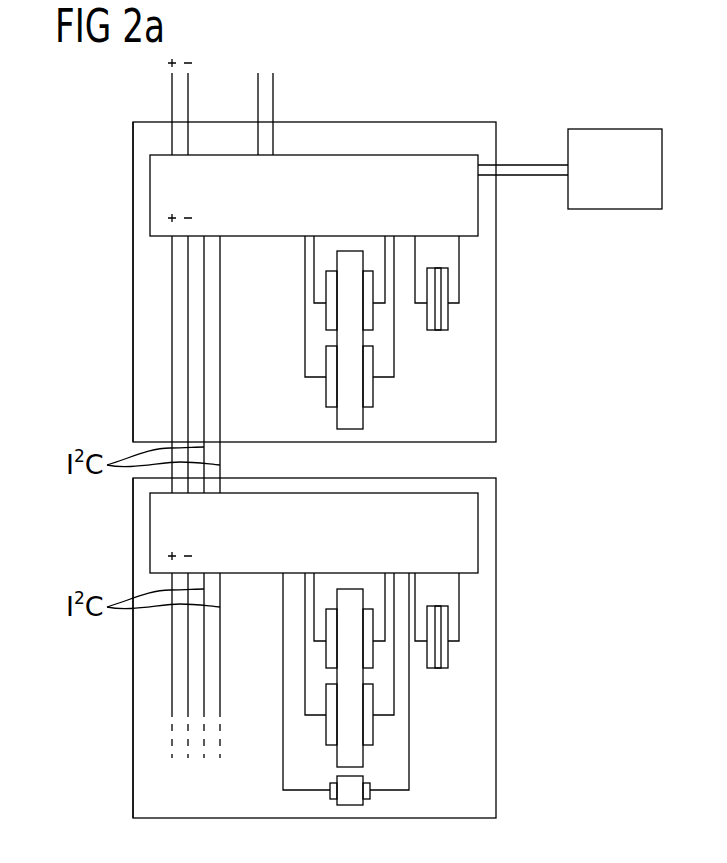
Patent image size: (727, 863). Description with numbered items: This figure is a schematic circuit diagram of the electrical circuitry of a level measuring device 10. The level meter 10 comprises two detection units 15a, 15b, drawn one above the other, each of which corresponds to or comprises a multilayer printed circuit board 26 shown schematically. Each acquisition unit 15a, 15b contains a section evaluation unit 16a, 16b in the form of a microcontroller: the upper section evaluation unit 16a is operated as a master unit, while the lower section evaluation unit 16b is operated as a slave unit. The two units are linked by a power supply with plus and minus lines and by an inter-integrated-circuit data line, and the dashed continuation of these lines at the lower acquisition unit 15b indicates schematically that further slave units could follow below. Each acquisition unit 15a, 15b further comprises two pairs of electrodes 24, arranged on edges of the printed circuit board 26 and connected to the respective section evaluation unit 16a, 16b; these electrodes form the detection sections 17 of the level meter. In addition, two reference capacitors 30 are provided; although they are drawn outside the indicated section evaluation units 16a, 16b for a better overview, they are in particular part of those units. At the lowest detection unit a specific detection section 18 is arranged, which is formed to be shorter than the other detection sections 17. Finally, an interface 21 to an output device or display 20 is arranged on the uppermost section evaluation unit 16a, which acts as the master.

The level measuring device 10 is at (74, 141).
The upper detection unit 15a is at (133, 283).
The lower detection unit 15b is at (133, 680).
The upper section evaluation unit 16a is at (479, 200).
The lower section evaluation unit 16b is at (479, 533).
The detection section 17 is at (318, 287).
The specific detection section 18 is at (373, 801).
The display 20 is at (615, 129).
The interface 21 is at (275, 98).
The electrodes 24 is at (326, 324).
The printed circuit board 26 is at (365, 338).
The reference capacitor 30 is at (448, 312).